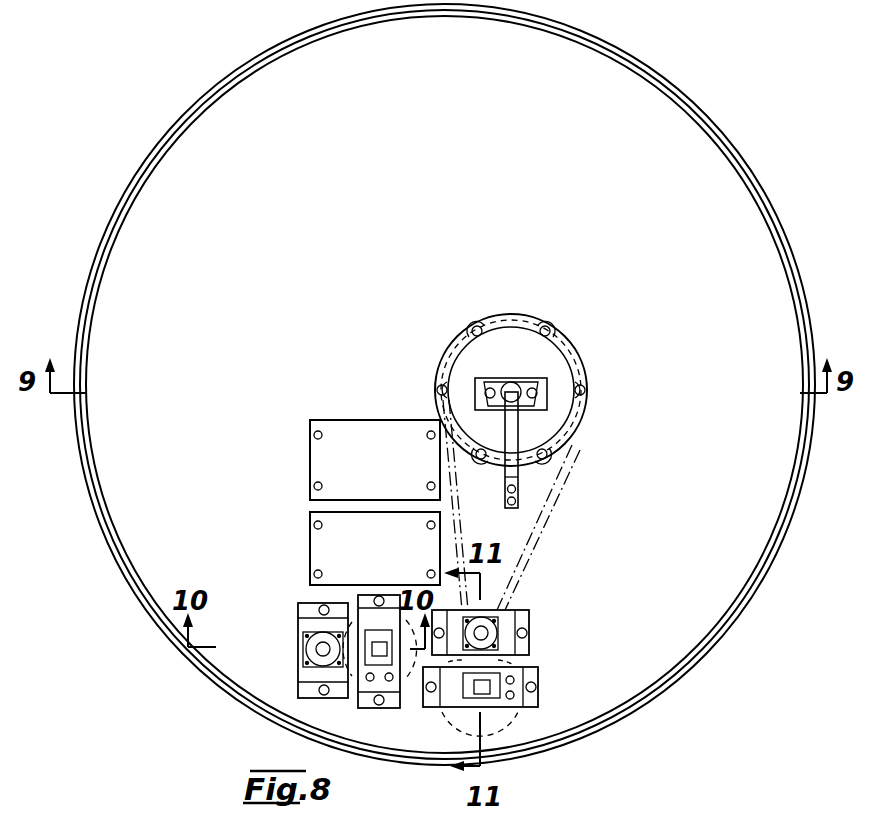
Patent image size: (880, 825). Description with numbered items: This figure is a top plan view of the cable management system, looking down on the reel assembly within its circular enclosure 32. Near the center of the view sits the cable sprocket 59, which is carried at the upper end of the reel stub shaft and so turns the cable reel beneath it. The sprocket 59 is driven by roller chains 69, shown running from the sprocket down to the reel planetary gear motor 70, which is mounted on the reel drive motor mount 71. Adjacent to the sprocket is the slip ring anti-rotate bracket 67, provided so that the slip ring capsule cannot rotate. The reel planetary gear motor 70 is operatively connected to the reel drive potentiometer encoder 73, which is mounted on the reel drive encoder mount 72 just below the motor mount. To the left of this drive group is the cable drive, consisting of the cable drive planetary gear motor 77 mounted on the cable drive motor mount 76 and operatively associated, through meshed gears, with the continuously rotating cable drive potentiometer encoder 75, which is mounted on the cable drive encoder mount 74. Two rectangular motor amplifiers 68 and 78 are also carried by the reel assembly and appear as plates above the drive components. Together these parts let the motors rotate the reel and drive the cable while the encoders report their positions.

The drum 32 is at (667, 703).
The cable sprocket 59 is at (558, 350).
The slip ring anti-rotate bracket 67 is at (520, 420).
The motor amplifier 68 is at (389, 479).
The roller chains 69 is at (555, 470).
The reel planetary gear motor 70 is at (490, 622).
The reel drive motor mount 71 is at (532, 622).
The reel drive encoder mount 72 is at (540, 678).
The reel drive potentiometer encoder 73 is at (488, 690).
The cable drive encoder mount 74 is at (390, 708).
The cable drive potentiometer encoder 75 is at (375, 655).
The cable drive motor mount 76 is at (300, 607).
The cable drive planetary gear motor 77 is at (308, 649).
The motor amplifier 78 is at (389, 565).